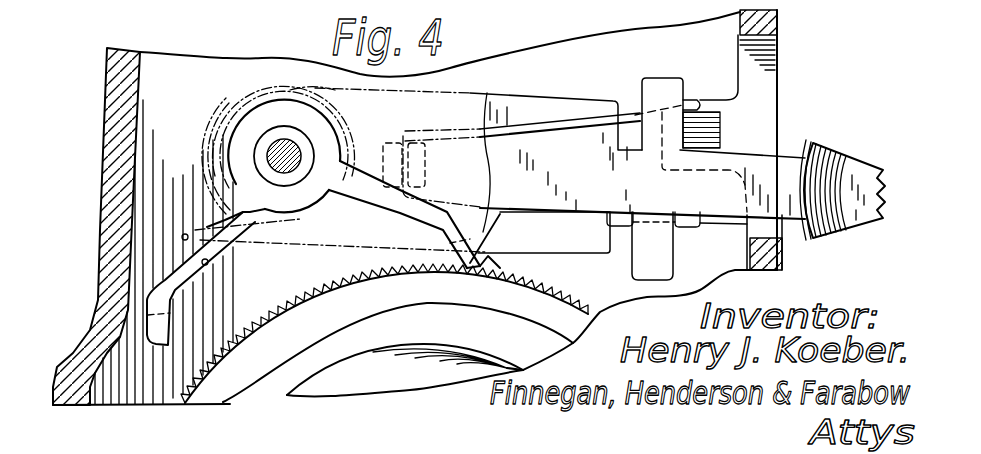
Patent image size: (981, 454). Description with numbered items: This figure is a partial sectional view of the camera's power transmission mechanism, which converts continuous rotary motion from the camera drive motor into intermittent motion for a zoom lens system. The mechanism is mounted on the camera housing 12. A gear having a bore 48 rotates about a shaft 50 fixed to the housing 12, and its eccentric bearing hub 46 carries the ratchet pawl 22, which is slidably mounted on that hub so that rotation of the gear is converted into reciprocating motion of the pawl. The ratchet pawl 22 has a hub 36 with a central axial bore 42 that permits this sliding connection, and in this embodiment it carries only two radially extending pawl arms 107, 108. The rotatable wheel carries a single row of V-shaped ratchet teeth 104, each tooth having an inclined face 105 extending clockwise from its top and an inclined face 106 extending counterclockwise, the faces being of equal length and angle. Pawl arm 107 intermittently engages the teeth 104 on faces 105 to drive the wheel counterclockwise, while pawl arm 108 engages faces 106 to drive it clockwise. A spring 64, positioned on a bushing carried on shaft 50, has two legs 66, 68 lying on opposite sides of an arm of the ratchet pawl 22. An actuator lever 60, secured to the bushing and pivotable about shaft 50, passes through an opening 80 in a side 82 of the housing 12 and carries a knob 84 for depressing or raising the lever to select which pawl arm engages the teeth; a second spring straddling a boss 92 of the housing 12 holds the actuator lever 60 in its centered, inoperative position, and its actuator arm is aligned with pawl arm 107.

The housing 12 is at (104, 150).
The ratchet pawl 22 is at (230, 156).
The hub 36 is at (233, 153).
The central axial bore 42 is at (313, 152).
The eccentric bearing hub 46 is at (258, 148).
The bore 48 is at (284, 139).
The shaft 50 is at (306, 146).
The actuator lever 60 is at (548, 147).
The spring 64 is at (312, 90).
The spring leg 66 is at (186, 232).
The spring leg 68 is at (210, 263).
The opening 80 is at (758, 108).
The side 82 is at (778, 25).
The knob 84 is at (835, 148).
The boss 92 is at (708, 120).
The ratchet teeth 104 is at (328, 275).
The inclined face 105 is at (592, 306).
The inclined face 106 is at (585, 300).
The pawl arm 107 is at (205, 293).
The pawl arm 108 is at (488, 222).